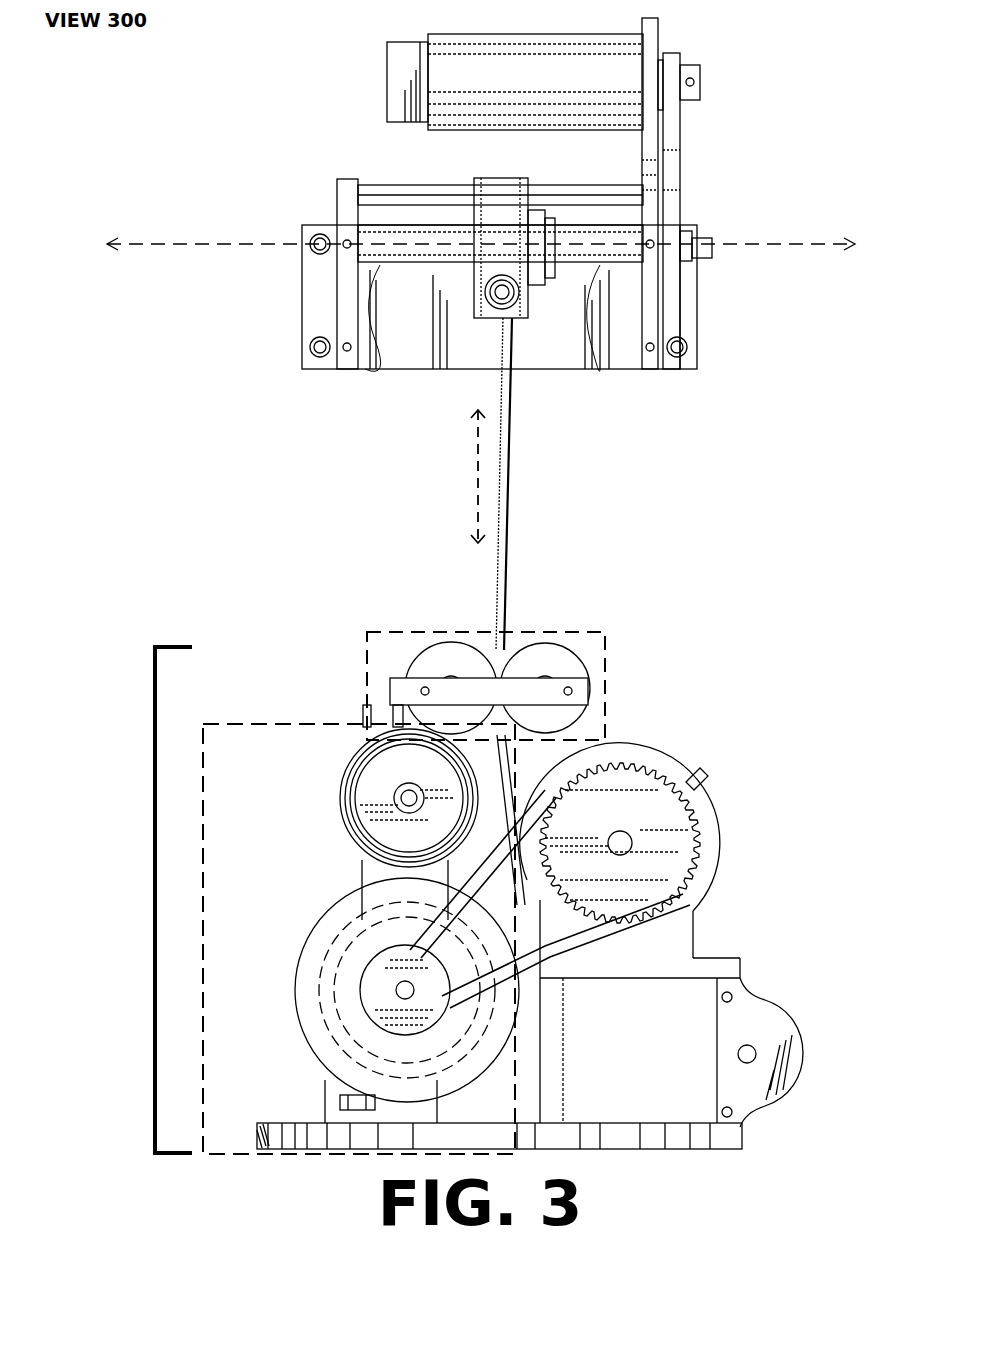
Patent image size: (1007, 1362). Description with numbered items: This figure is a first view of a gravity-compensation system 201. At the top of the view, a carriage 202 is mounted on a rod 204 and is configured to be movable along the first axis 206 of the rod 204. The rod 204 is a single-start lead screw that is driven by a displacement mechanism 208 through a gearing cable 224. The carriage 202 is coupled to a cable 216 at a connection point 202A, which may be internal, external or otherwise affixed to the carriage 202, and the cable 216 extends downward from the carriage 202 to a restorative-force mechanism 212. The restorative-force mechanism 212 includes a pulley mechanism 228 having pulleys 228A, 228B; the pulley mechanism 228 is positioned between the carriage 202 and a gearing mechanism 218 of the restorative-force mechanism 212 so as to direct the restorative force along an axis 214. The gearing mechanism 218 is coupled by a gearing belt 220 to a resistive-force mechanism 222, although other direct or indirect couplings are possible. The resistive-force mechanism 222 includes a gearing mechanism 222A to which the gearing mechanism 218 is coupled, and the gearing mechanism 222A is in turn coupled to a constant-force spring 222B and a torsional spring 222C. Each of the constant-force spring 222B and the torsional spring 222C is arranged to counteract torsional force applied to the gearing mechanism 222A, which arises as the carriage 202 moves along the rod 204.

The gravity-compensation system 201 is at (797, 58).
The carriage 202 is at (518, 318).
The connection point 202A is at (487, 300).
The rod 204 is at (388, 262).
The first axis 206 is at (821, 247).
The displacement mechanism 208 is at (448, 70).
The restorative-force mechanism 212 is at (155, 1020).
The axis 214 is at (478, 507).
The cable 216 is at (505, 521).
The gearing mechanism 218 is at (718, 840).
The gearing belt 220 is at (563, 978).
The resistive-force mechanism 222 is at (361, 903).
The gearing mechanism 222A is at (318, 945).
The constant-force spring 222B is at (340, 795).
The torsional spring 222C is at (350, 1048).
The gearing cable 224 is at (668, 172).
The pulley mechanism 228 is at (527, 658).
The pulley 228A is at (448, 642).
The pulley 228B is at (545, 642).